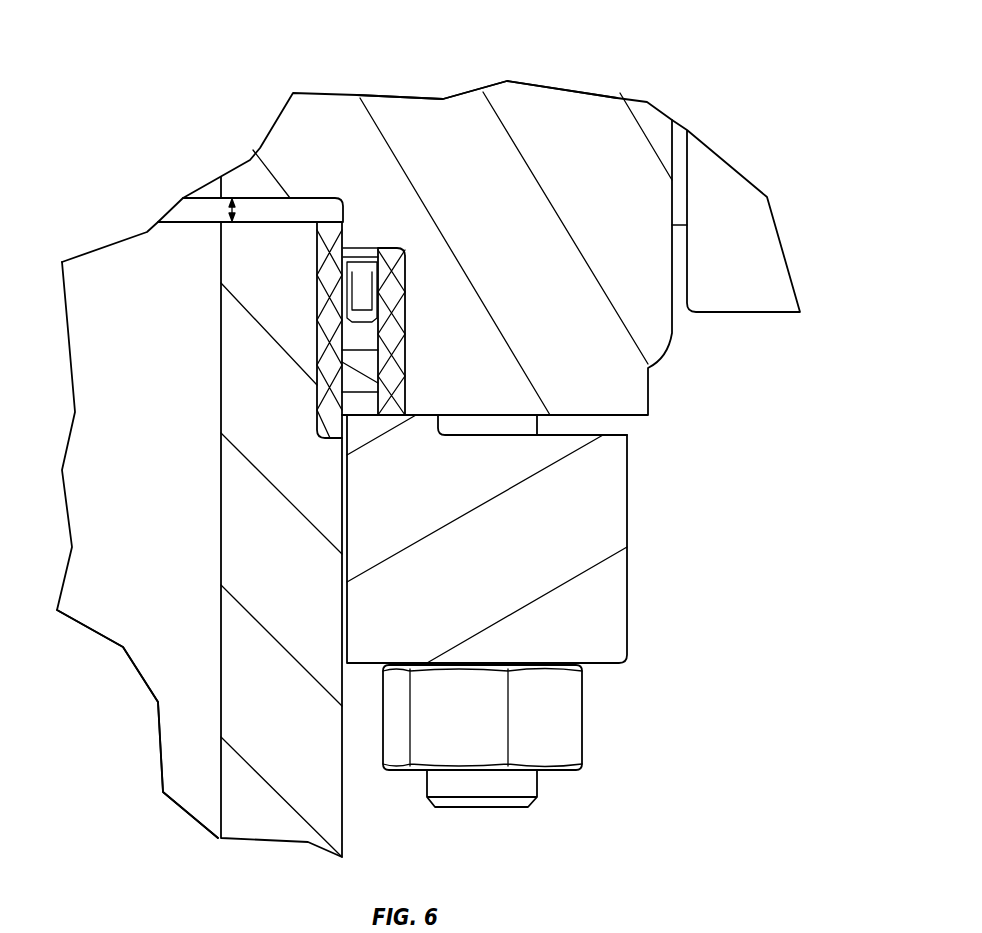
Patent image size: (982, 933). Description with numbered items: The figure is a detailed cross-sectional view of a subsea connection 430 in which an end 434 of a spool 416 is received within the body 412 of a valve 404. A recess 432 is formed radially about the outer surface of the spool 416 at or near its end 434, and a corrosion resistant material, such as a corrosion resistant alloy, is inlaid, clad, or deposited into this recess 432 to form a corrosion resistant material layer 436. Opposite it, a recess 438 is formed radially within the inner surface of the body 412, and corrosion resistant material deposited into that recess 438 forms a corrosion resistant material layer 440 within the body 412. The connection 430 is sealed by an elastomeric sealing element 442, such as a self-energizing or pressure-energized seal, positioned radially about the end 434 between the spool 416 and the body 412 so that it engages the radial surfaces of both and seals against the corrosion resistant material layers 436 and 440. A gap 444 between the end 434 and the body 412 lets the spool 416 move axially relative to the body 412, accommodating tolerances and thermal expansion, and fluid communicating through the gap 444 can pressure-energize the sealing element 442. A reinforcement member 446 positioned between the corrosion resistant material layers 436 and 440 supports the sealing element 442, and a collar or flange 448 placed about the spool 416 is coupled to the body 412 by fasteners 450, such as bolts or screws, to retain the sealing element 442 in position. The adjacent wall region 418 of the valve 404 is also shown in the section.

The valve 404 is at (603, 63).
The body 412 is at (427, 108).
The spool 416 is at (233, 497).
The side wall 418 is at (220, 617).
The subsea connection 430 is at (700, 447).
The recess 432 is at (317, 390).
The end 434 is at (288, 222).
The corrosion resistant material layer 436 is at (332, 237).
The recess 438 is at (405, 302).
The corrosion resistant material layer 440 is at (388, 265).
The sealing element 442 is at (348, 292).
The gap 444 is at (230, 212).
The reinforcement member 446 is at (368, 407).
The flange 448 is at (627, 527).
The fasteners 450 is at (527, 772).